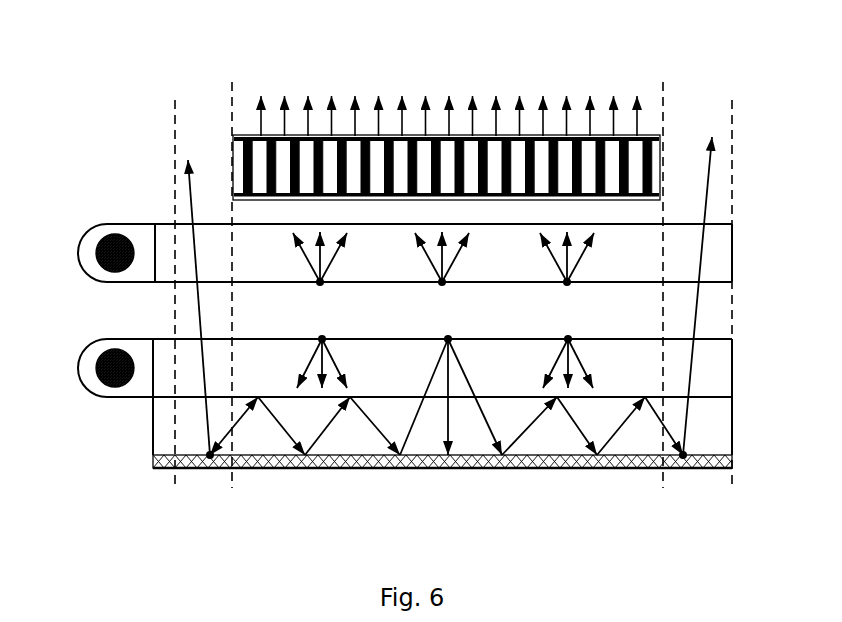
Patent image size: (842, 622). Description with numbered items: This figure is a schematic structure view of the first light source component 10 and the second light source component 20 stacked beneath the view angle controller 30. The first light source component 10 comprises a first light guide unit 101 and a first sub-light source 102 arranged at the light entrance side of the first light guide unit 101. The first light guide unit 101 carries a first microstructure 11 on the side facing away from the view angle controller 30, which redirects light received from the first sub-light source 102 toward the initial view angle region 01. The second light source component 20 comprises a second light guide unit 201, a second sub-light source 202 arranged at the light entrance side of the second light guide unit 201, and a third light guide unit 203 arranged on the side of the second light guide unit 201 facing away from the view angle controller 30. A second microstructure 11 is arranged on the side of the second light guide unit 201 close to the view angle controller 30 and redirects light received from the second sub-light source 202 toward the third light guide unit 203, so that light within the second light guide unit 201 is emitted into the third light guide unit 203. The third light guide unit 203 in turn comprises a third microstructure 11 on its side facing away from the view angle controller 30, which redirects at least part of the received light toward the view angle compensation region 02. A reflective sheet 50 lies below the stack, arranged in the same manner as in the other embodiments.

The initial view angle region 01 is at (233, 73).
The view angle compensation region 02 is at (232, 110).
The first light source component 10 is at (398, 194).
The first light guide unit 101 is at (168, 228).
The first sub-light source 102 is at (132, 228).
The microstructure 11 is at (318, 285).
The view angle controller 30 is at (650, 177).
The second light source component 20 is at (376, 434).
The second light guide unit 201 is at (172, 392).
The second sub-light source 202 is at (110, 390).
The third light guide unit 203 is at (205, 428).
The reflective sheet 50 is at (393, 470).